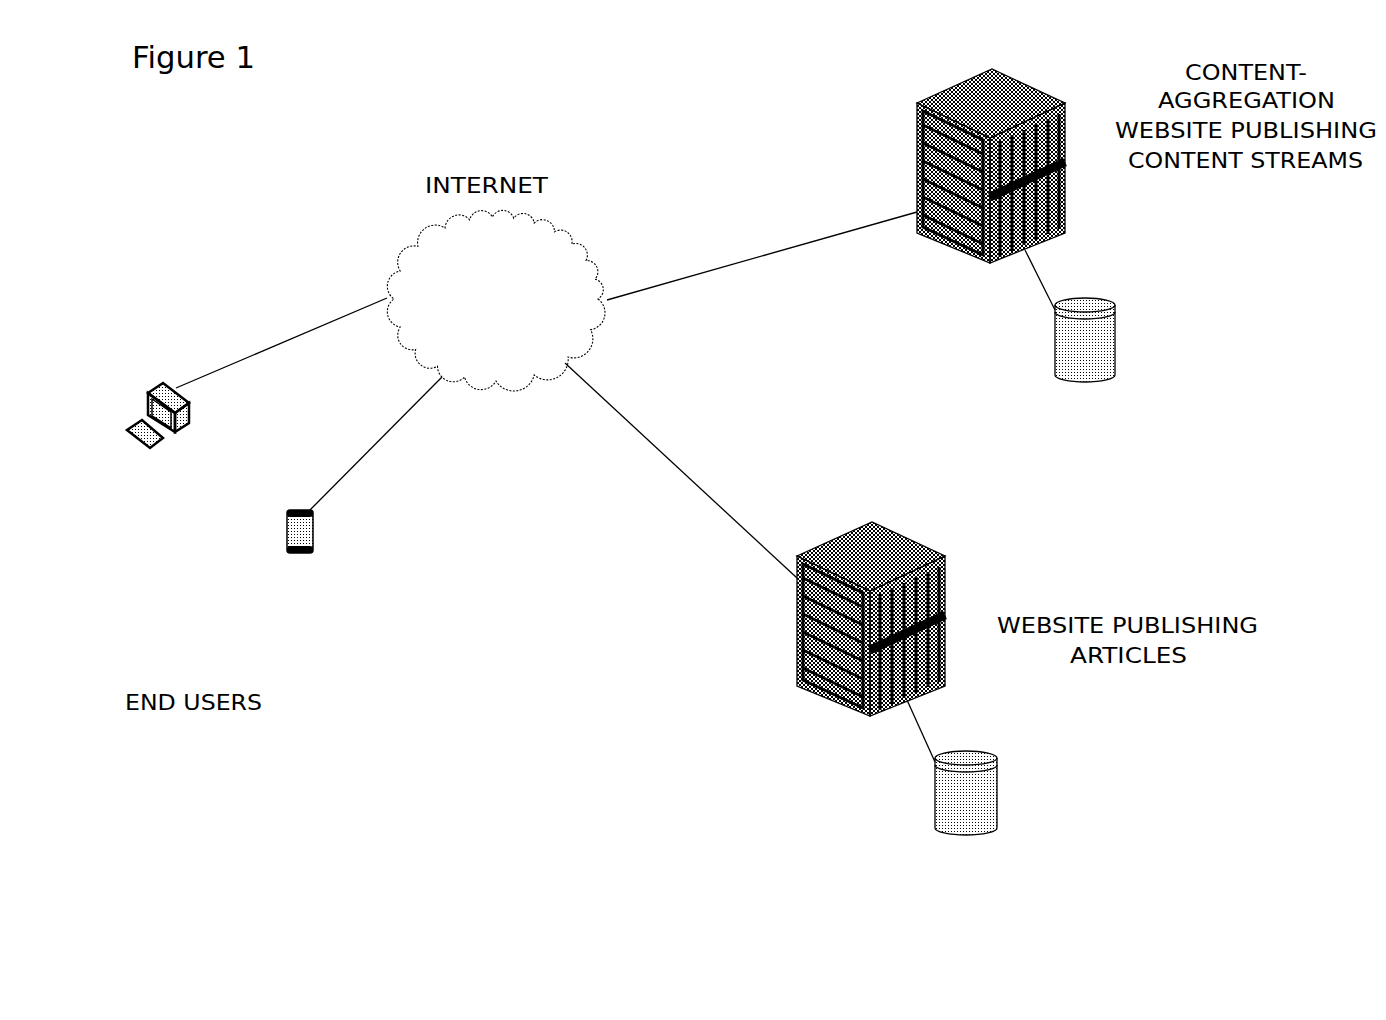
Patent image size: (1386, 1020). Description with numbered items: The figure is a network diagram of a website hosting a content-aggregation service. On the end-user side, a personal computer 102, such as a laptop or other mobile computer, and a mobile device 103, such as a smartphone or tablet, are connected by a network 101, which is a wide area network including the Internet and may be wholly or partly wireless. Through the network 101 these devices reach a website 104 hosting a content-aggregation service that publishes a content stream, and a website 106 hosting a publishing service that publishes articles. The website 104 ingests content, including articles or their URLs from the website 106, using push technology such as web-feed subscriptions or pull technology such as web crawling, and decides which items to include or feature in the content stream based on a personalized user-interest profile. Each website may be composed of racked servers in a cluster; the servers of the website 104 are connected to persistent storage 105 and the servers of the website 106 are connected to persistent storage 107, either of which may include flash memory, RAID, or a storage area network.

The network 101 is at (587, 257).
The personal computer 102 is at (175, 435).
The mobile device 103 is at (307, 557).
The website hosting a content-aggregation service 104 is at (952, 247).
The persistent storage 105 is at (1087, 383).
The website hosting a publishing service 106 is at (845, 708).
The persistent storage 107 is at (968, 835).